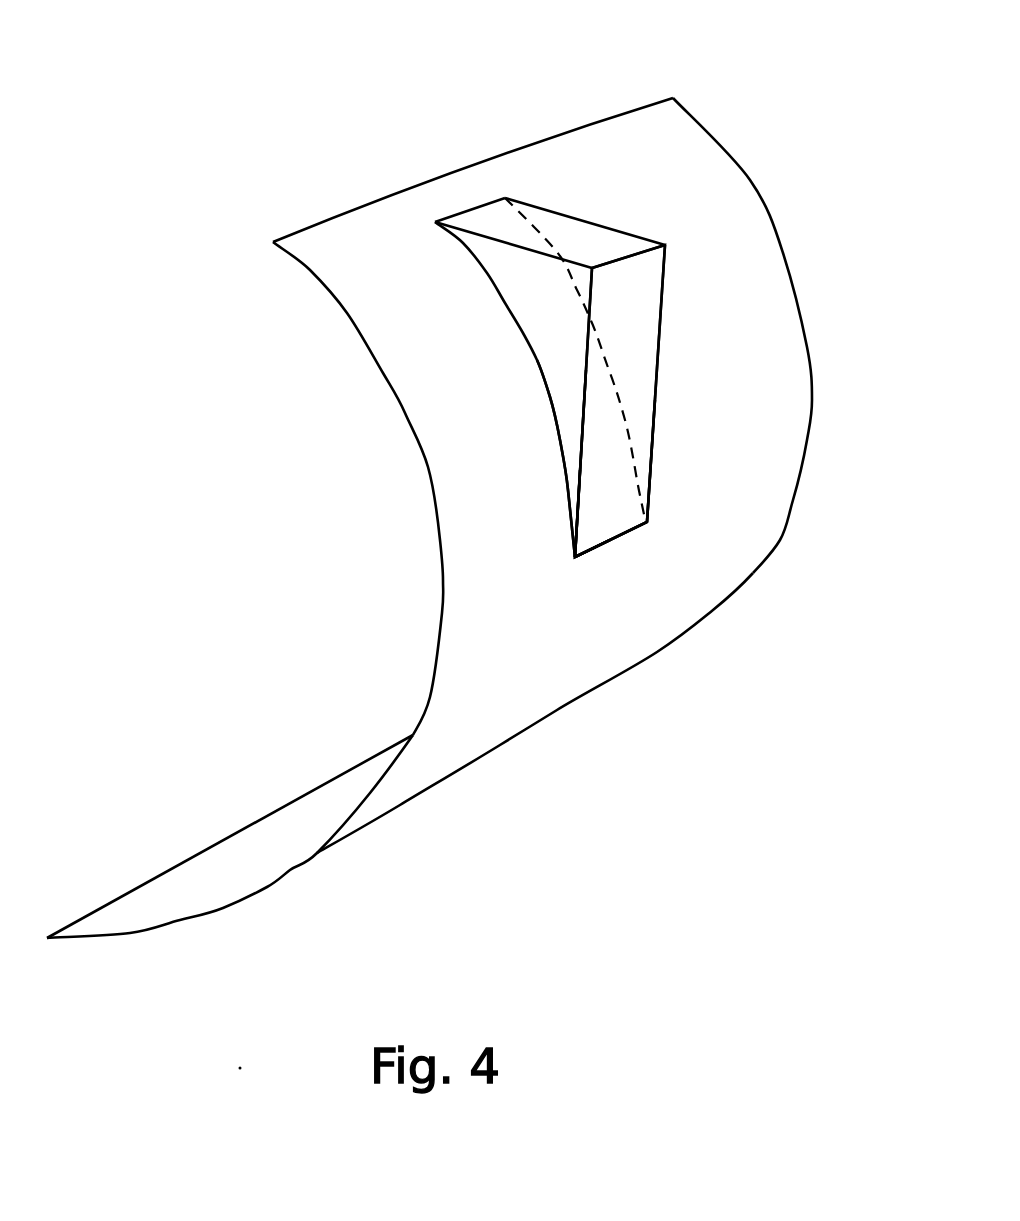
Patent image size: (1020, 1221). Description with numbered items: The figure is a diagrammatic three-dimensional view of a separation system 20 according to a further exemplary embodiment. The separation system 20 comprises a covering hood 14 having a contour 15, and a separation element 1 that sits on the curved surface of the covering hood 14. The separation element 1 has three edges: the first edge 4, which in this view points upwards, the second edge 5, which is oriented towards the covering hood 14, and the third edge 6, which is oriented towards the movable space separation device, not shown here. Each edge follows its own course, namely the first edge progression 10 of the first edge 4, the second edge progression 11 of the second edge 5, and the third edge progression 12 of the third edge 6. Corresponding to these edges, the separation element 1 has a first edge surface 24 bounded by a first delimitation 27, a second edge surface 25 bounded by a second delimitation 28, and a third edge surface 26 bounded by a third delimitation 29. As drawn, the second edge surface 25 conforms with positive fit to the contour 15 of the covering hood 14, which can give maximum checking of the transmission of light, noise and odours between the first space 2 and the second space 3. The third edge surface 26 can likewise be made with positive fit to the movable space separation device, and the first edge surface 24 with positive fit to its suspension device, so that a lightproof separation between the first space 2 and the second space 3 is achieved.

The separation system 20 is at (205, 76).
The separation element 1 is at (487, 218).
The first space 2 is at (881, 222).
The second space 3 is at (162, 808).
The first edge 4 is at (585, 233).
The second edge 5 is at (550, 318).
The third edge 6 is at (607, 473).
The first edge progression of the first edge 10 is at (623, 243).
The second edge progression of the second edge 11 is at (562, 382).
The third edge progression of the third edge 12 is at (638, 360).
The covering hood 14 is at (535, 682).
The contour of the covering hood 15 is at (447, 745).
The first edge surface 24 is at (550, 220).
The second edge surface 25 is at (507, 270).
The third edge surface 26 is at (597, 510).
The delimitation of the first edge surface 27 is at (627, 260).
The delimitation of the second edge surface 28 is at (535, 353).
The delimitation of the third edge surface 29 is at (620, 540).